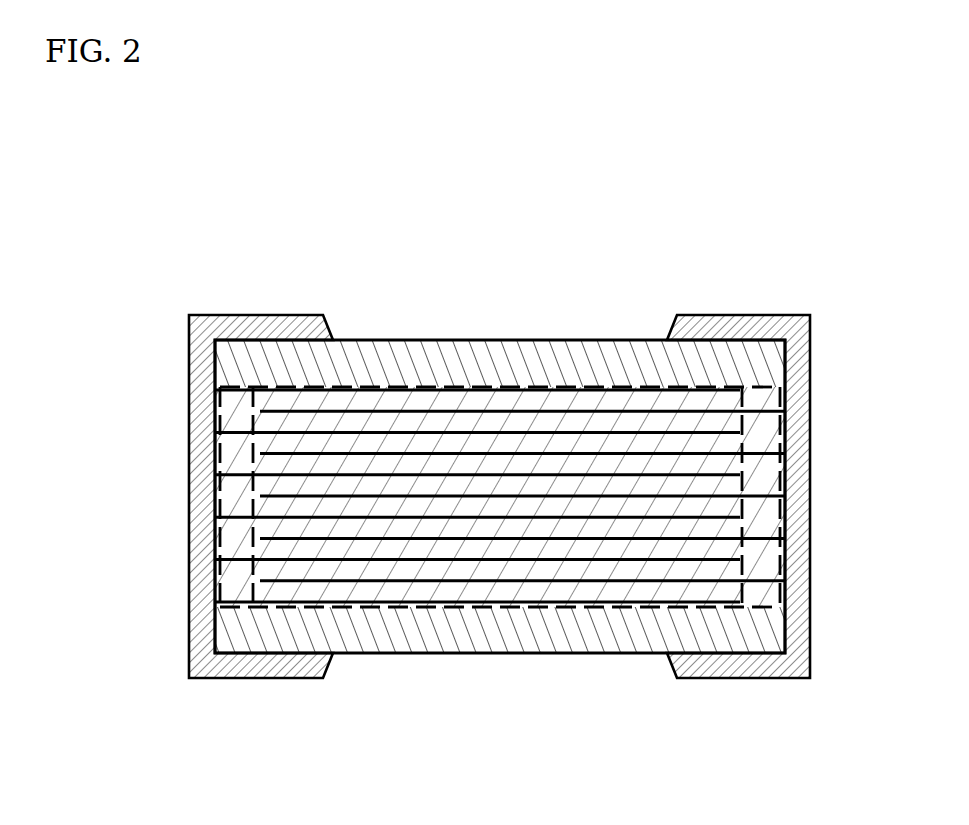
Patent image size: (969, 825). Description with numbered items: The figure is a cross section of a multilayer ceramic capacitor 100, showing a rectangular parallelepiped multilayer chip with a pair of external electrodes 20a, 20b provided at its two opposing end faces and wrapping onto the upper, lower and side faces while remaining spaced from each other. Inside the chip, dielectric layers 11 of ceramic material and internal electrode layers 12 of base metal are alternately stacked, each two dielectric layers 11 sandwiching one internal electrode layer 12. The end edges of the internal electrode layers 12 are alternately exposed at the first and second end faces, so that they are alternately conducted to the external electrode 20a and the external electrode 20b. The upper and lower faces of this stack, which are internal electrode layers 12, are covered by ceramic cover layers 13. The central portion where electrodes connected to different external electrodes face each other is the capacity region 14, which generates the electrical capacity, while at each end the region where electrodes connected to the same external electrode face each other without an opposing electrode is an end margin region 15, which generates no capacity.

The multilayer ceramic capacitor 100 is at (712, 260).
The dielectric layer 11 is at (615, 567).
The internal electrode layer 12 is at (490, 540).
The cover layer 13 is at (398, 355).
The capacity region 14 is at (522, 387).
The end margin region 15 is at (238, 387).
The external electrode 20a is at (212, 315).
The external electrode 20b is at (775, 315).